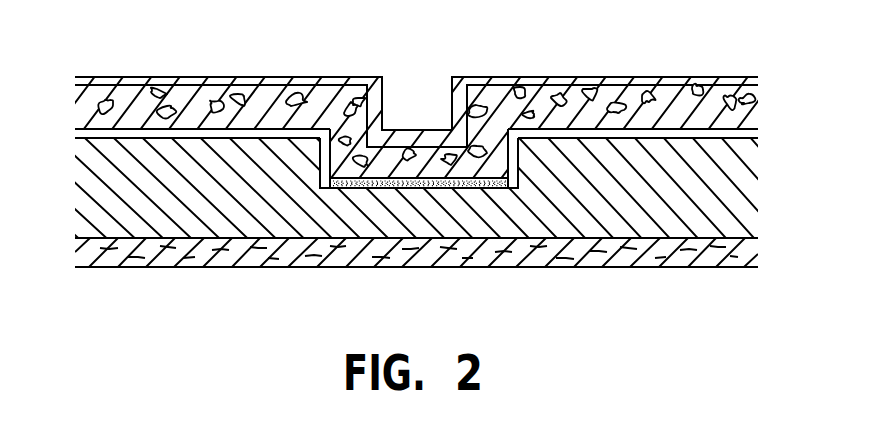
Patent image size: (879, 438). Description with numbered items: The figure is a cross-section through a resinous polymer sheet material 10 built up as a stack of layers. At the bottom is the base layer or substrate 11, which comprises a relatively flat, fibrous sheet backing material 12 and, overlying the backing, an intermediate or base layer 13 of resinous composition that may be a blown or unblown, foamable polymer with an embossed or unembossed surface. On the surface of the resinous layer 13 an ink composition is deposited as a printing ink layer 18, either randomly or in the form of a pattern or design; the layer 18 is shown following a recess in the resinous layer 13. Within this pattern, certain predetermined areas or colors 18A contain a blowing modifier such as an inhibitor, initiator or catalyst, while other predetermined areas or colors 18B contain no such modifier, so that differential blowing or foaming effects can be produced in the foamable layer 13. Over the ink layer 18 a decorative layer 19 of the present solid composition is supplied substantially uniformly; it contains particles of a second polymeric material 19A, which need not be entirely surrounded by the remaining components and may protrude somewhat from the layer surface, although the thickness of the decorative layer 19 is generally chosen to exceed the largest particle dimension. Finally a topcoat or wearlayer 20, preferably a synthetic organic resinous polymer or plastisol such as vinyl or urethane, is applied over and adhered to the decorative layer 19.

The resinous polymer sheet material 10 is at (841, 111).
The base layer or substrate 11 is at (439, 180).
The sheet backing material 12 is at (750, 256).
The intermediate or base layer 13 is at (92, 195).
The printing ink layer 18 is at (82, 136).
The predetermined areas or colors containing blowing modifier 18A is at (410, 143).
The predetermined areas or colors without blowing modifier 18B is at (600, 130).
The decorative layer 19 is at (80, 108).
The second polymeric particles 19A is at (168, 110).
The topcoat or wearlayer 20 is at (77, 83).